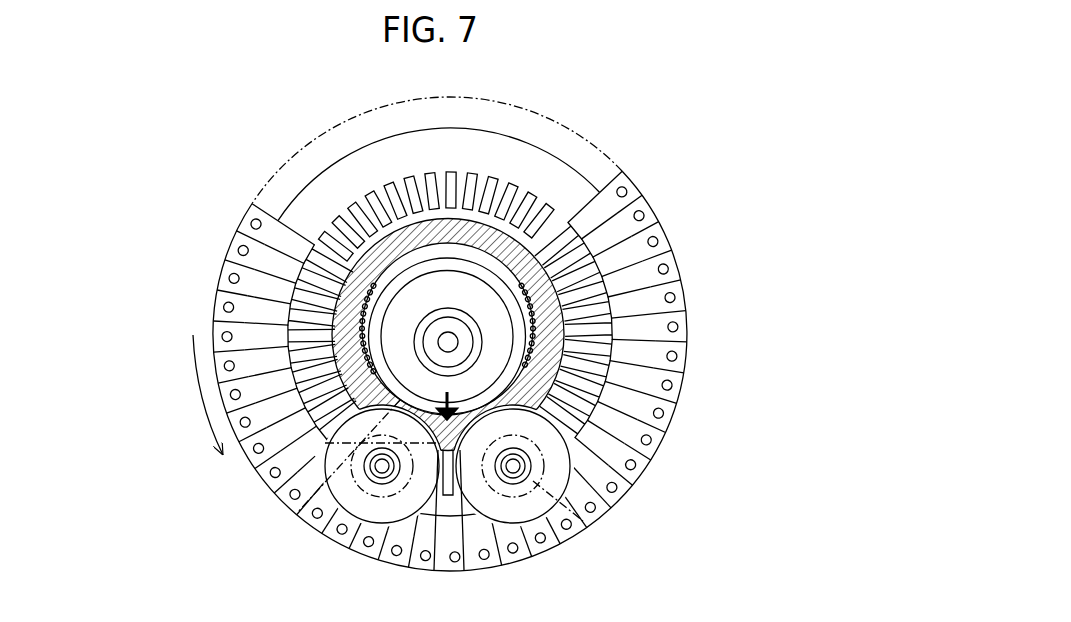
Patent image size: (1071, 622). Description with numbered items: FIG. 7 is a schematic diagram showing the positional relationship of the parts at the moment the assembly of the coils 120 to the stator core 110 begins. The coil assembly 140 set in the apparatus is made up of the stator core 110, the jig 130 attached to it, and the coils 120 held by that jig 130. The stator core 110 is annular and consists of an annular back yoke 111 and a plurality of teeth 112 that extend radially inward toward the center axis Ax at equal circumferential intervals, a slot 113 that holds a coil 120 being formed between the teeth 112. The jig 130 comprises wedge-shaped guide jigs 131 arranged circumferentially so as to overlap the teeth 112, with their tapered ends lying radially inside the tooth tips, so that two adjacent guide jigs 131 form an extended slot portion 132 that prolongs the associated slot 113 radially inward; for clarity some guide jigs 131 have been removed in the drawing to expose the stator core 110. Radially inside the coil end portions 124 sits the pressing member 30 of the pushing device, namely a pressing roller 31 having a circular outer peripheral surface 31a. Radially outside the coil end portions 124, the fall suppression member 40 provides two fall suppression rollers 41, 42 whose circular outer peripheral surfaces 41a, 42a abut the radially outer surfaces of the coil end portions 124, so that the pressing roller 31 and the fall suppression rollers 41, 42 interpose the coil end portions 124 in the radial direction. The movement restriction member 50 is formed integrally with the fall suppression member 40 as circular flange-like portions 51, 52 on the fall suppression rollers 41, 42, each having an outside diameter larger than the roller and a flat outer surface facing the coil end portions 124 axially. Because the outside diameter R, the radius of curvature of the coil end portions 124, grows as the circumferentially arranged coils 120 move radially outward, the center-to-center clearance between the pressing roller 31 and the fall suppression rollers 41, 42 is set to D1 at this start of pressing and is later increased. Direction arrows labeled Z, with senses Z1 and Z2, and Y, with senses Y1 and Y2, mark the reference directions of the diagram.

The stator core 110 is at (548, 152).
The back yoke 111 is at (521, 163).
The teeth 112 is at (426, 174).
The slot 113 is at (457, 177).
The coils 120 is at (505, 369).
The coil end portions 124 is at (668, 283).
The jig 130 is at (378, 301).
The guide jigs 131 is at (290, 253).
The extended slot portion 132 is at (290, 292).
The coil assembly 140 is at (238, 220).
The pressing member 30 is at (309, 338).
The pressing roller 31 is at (311, 336).
The outer peripheral surface 31a is at (373, 301).
The fall suppression member 40 is at (457, 469).
The fall suppression roller 41 is at (267, 466).
The outer peripheral surface 41a is at (345, 478).
The fall suppression roller 42 is at (637, 469).
The outer peripheral surface 42a is at (575, 474).
The movement restriction member 50 is at (446, 481).
The flange-like portion 51 is at (300, 513).
The flange-like portion 52 is at (567, 532).
The center axis Ax is at (455, 339).
The outside diameter R is at (401, 220).
The clearance D1 is at (520, 466).
The Z direction Z is at (825, 277).
The Z1 direction Z1 is at (861, 277).
The Z2 direction Z2 is at (861, 340).
The Y direction Y is at (250, 583).
The Y1 direction Y1 is at (185, 552).
The Y2 direction Y2 is at (250, 552).